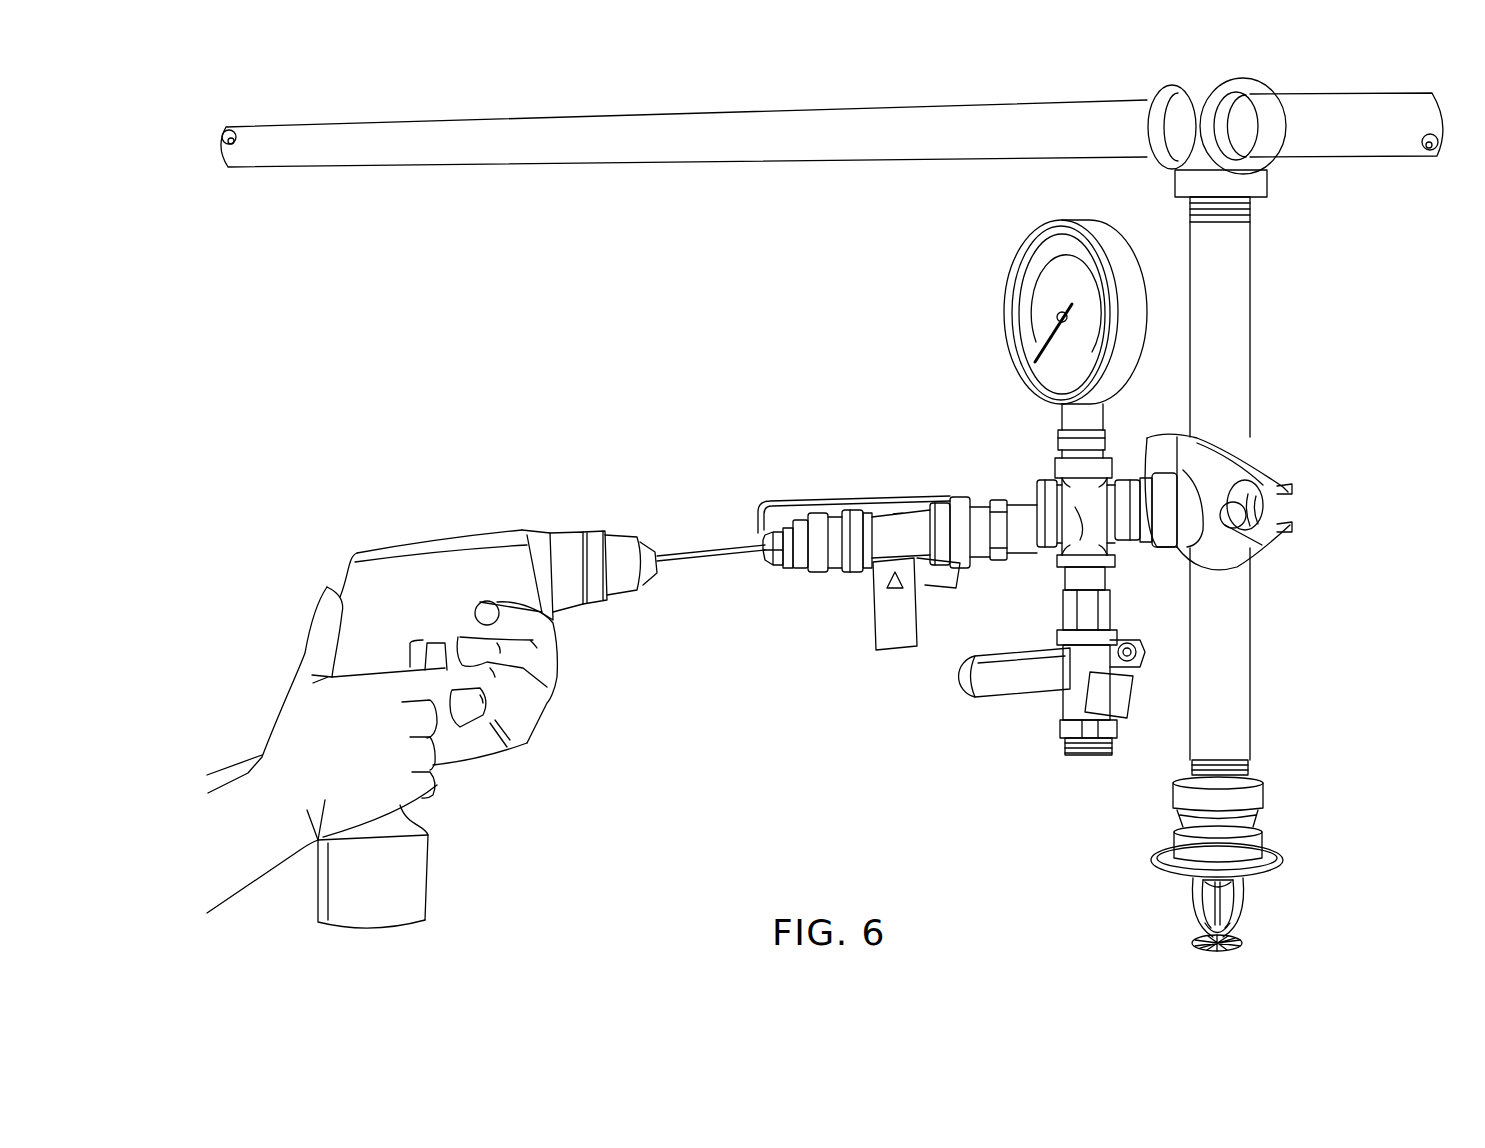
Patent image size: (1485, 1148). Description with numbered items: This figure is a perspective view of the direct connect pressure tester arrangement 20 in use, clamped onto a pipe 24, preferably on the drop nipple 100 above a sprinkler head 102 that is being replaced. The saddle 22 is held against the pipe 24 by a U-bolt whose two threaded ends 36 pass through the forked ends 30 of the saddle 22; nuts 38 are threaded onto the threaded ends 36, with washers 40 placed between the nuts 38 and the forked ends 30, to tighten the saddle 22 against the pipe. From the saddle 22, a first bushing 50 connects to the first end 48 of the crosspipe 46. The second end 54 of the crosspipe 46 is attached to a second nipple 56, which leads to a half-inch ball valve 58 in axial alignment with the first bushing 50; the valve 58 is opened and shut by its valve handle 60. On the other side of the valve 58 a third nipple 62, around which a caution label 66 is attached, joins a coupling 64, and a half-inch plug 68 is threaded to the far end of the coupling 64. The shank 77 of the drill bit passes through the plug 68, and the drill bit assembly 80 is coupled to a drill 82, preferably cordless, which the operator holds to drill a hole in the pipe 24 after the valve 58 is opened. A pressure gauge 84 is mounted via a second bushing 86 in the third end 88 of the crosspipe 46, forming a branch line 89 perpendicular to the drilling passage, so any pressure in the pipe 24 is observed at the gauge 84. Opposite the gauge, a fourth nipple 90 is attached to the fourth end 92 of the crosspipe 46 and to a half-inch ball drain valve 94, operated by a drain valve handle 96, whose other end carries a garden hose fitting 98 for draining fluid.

The direct connect pressure tester arrangement 20 is at (692, 459).
The saddle 22 is at (1248, 462).
The pipe 24 is at (1252, 700).
The forked ends 30 is at (1290, 510).
The threaded ends 36 is at (1235, 525).
The nuts 38 is at (1273, 530).
The washers 40 is at (1288, 500).
The crosspipe 46 is at (1060, 482).
The first end 48 is at (1143, 545).
The first bushing 50 is at (1160, 550).
The second end 54 is at (1048, 485).
The second nipple 56 is at (1023, 487).
The ball valve 58 is at (975, 505).
The valve handle 60 is at (805, 503).
The third nipple 62 is at (866, 515).
The coupling 64 is at (818, 574).
The caution label 66 is at (884, 651).
The plug 68 is at (776, 568).
The shank 77 is at (700, 550).
The drill bit assembly 80 is at (692, 572).
The drill 82 is at (402, 545).
The pressure gauge 84 is at (1078, 220).
The second bushing 86 is at (1106, 448).
The third end 88 is at (1077, 498).
The branch line 89 is at (1108, 460).
The fourth nipple 90 is at (1062, 584).
The fourth end 92 is at (1058, 563).
The ball drain valve 94 is at (1063, 637).
The drain valve handle 96 is at (970, 690).
The garden hose fitting 98 is at (1060, 726).
The drop nipple 100 is at (1252, 292).
The sprinkler head 102 is at (1243, 904).